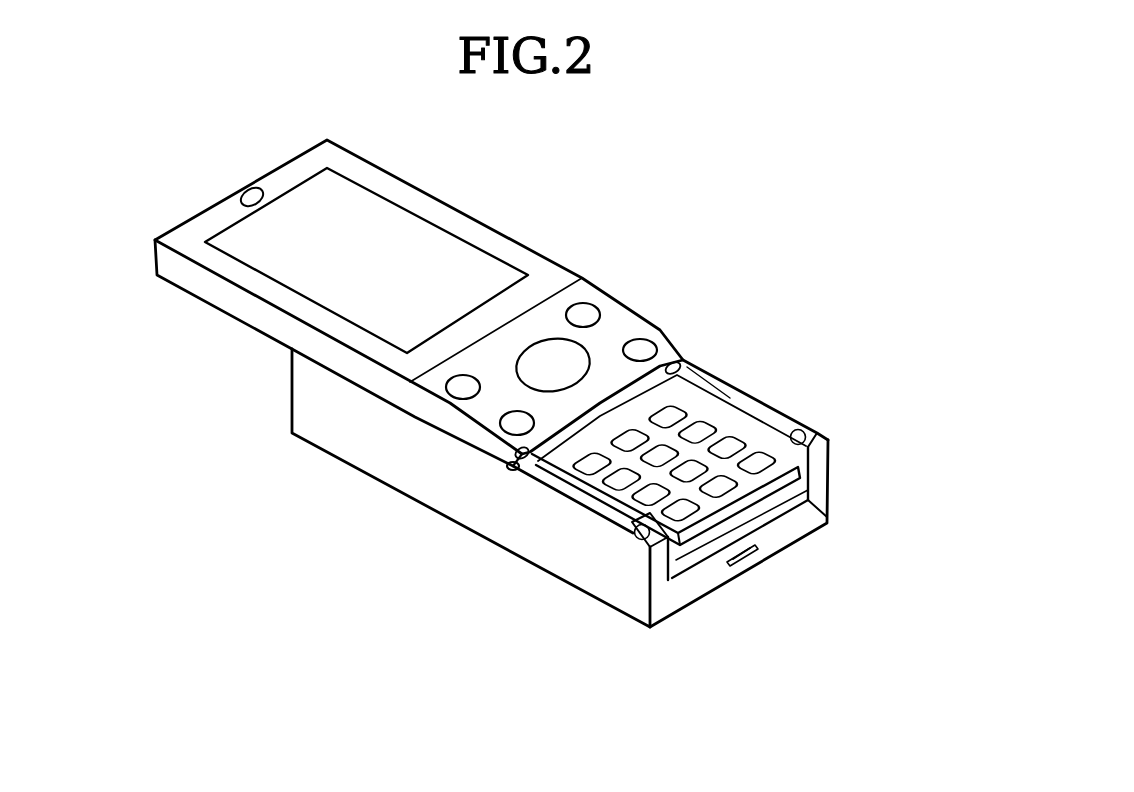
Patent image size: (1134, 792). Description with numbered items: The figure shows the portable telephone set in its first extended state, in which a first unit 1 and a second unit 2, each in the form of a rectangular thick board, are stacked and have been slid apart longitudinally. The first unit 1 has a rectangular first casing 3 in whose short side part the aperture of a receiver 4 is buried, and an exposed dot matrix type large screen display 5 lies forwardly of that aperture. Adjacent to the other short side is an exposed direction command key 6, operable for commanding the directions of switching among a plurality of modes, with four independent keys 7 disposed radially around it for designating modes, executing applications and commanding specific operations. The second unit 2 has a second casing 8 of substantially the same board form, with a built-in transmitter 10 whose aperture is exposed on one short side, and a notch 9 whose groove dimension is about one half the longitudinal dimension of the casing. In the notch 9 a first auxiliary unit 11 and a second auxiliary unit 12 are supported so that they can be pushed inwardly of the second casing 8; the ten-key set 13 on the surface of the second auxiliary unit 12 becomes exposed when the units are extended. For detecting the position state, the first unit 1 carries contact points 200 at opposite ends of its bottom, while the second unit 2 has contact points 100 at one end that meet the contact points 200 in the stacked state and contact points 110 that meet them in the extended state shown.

The first unit 1 is at (203, 205).
The second unit 2 is at (290, 412).
The first casing 3 is at (397, 183).
The receiver 4 is at (252, 189).
The large screen display 5 is at (413, 228).
The direction command key 6 is at (580, 352).
The independent keys 7 is at (587, 308).
The second casing 8 is at (531, 543).
The notch 9 is at (677, 575).
The transmitter 10 is at (747, 557).
The first auxiliary unit 11 is at (820, 521).
The second auxiliary unit 12 is at (804, 470).
The ten-key set 13 is at (687, 448).
The contact points 100 is at (632, 525).
The contact points 110 is at (515, 468).
The contact points 200 is at (682, 356).